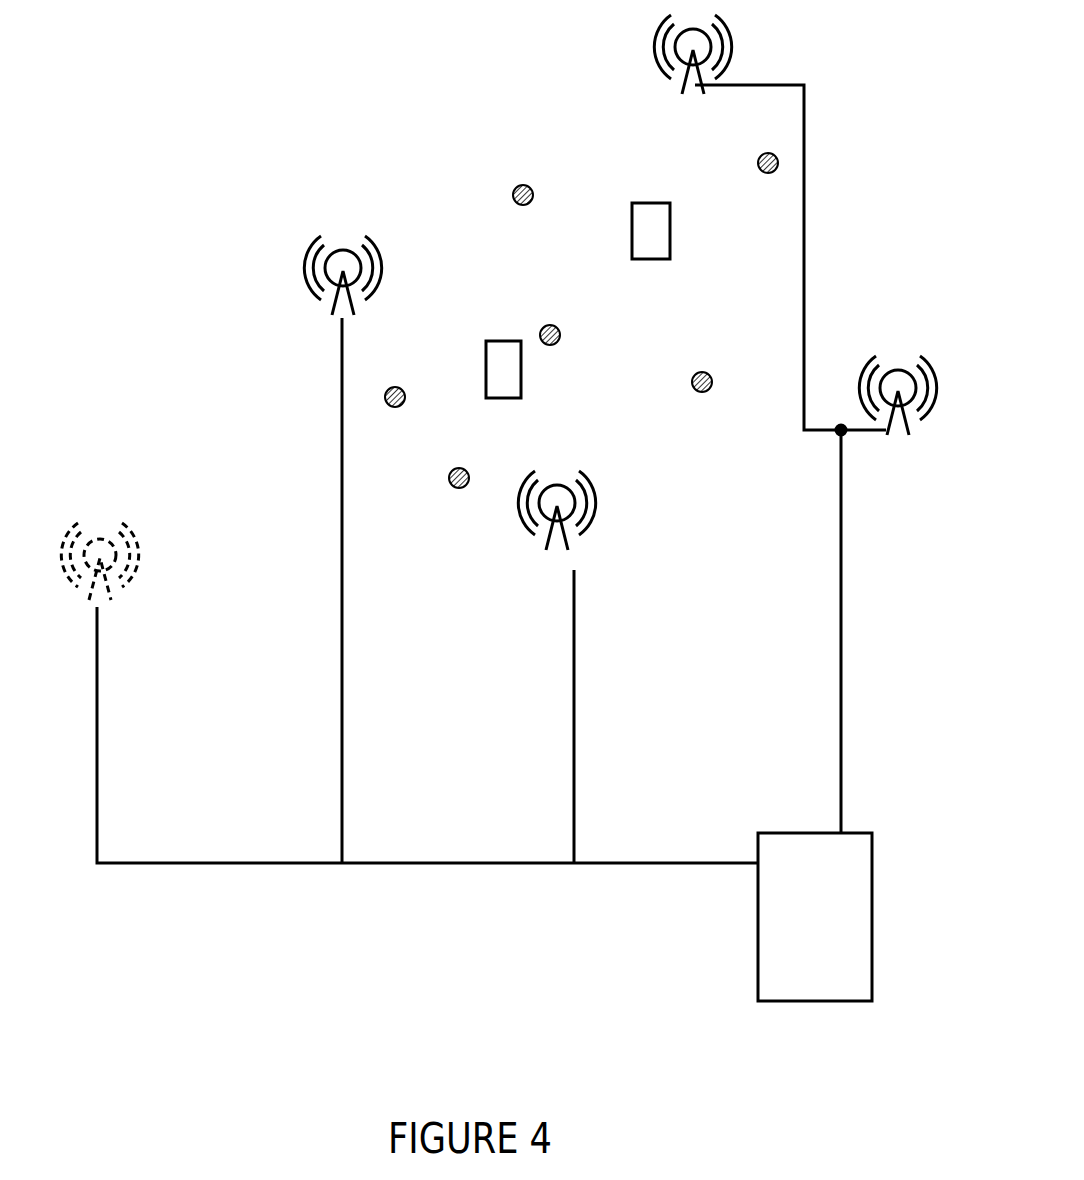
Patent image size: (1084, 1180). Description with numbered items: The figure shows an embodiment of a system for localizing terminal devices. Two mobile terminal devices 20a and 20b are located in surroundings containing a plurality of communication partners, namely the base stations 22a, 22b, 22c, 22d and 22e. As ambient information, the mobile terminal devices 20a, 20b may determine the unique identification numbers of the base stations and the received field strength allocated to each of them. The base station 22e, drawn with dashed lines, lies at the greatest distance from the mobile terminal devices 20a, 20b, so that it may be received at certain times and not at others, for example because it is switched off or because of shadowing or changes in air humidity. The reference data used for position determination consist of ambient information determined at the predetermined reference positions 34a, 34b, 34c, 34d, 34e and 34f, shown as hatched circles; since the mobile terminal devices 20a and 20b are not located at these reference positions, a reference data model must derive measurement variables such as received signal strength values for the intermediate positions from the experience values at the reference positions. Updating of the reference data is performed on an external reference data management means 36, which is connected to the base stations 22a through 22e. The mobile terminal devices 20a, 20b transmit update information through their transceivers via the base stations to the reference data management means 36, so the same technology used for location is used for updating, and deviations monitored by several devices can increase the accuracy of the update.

The mobile terminal device 20a is at (521, 378).
The mobile terminal device 20b is at (670, 240).
The base station 22a is at (547, 538).
The base station 22b is at (888, 428).
The base station 22c is at (683, 90).
The base station 22d is at (355, 308).
The base station 22e is at (107, 585).
The reference position 34a is at (459, 489).
The reference position 34b is at (395, 408).
The reference position 34c is at (703, 392).
The reference position 34d is at (560, 330).
The reference position 34e is at (768, 173).
The reference position 34f is at (525, 205).
The external reference data management means 36 is at (820, 1001).